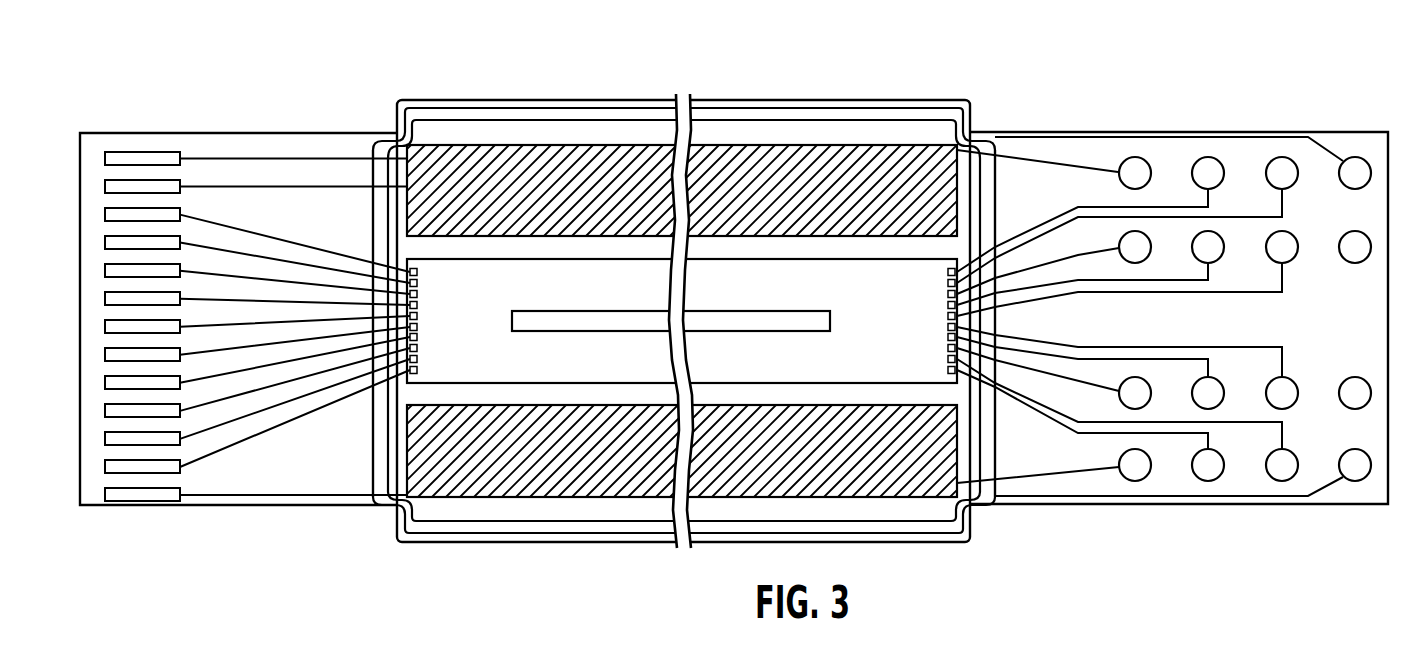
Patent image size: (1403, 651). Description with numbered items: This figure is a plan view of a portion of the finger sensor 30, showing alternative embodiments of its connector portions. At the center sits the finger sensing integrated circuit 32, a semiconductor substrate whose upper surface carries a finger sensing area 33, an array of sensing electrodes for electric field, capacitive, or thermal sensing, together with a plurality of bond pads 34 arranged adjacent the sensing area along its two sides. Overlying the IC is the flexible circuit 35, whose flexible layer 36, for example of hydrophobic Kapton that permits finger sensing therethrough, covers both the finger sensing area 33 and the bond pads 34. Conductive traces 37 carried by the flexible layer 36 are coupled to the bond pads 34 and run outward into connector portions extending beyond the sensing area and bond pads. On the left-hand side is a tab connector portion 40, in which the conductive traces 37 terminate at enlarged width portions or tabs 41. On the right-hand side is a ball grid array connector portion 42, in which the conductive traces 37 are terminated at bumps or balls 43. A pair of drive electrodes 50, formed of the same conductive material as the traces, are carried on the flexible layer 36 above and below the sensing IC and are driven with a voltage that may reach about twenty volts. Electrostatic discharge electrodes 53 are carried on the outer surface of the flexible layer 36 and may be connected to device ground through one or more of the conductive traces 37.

The finger sensor 30 is at (808, 52).
The finger sensing integrated circuit 32 is at (895, 307).
The finger sensing area 33 is at (757, 331).
The bond pads 34 is at (418, 341).
The flexible circuit 35 is at (590, 100).
The flexible layer 36 is at (318, 133).
The conductive traces 37 is at (1035, 225).
The tab connector portion 40 is at (177, 508).
The tabs 41 is at (105, 380).
The ball grid array connector portion 42 is at (1240, 505).
The balls 43 is at (1207, 477).
The drive electrodes 50 is at (512, 160).
The electrostatic discharge electrodes 53 is at (752, 115).